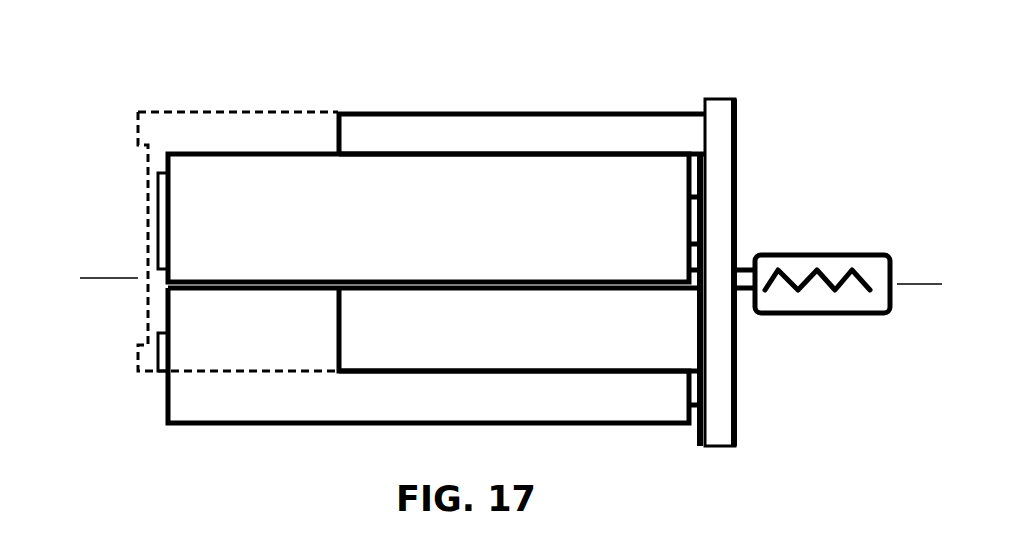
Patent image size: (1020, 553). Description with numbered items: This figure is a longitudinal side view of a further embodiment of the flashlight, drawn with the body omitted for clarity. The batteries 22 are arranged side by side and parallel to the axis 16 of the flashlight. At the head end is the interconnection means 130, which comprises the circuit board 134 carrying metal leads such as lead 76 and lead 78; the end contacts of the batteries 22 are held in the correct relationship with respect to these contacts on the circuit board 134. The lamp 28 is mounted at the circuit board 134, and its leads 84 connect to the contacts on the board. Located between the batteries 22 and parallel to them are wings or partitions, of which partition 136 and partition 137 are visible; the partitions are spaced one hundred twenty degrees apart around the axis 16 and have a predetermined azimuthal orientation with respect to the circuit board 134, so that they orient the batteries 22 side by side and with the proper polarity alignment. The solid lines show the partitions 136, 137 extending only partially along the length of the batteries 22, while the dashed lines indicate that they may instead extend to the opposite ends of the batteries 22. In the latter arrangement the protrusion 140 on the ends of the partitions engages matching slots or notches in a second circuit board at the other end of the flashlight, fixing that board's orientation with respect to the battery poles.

The axis 16 is at (120, 277).
The batteries 22 is at (423, 288).
The lamp 28 is at (810, 316).
The metal lead 76 is at (697, 212).
The metal lead 78 is at (700, 336).
The leads 84 is at (743, 262).
The interconnection means 130 is at (752, 101).
The circuit board 134 is at (738, 183).
The partition 136 is at (422, 112).
The partition 137 is at (434, 329).
The protrusion 140 is at (137, 133).